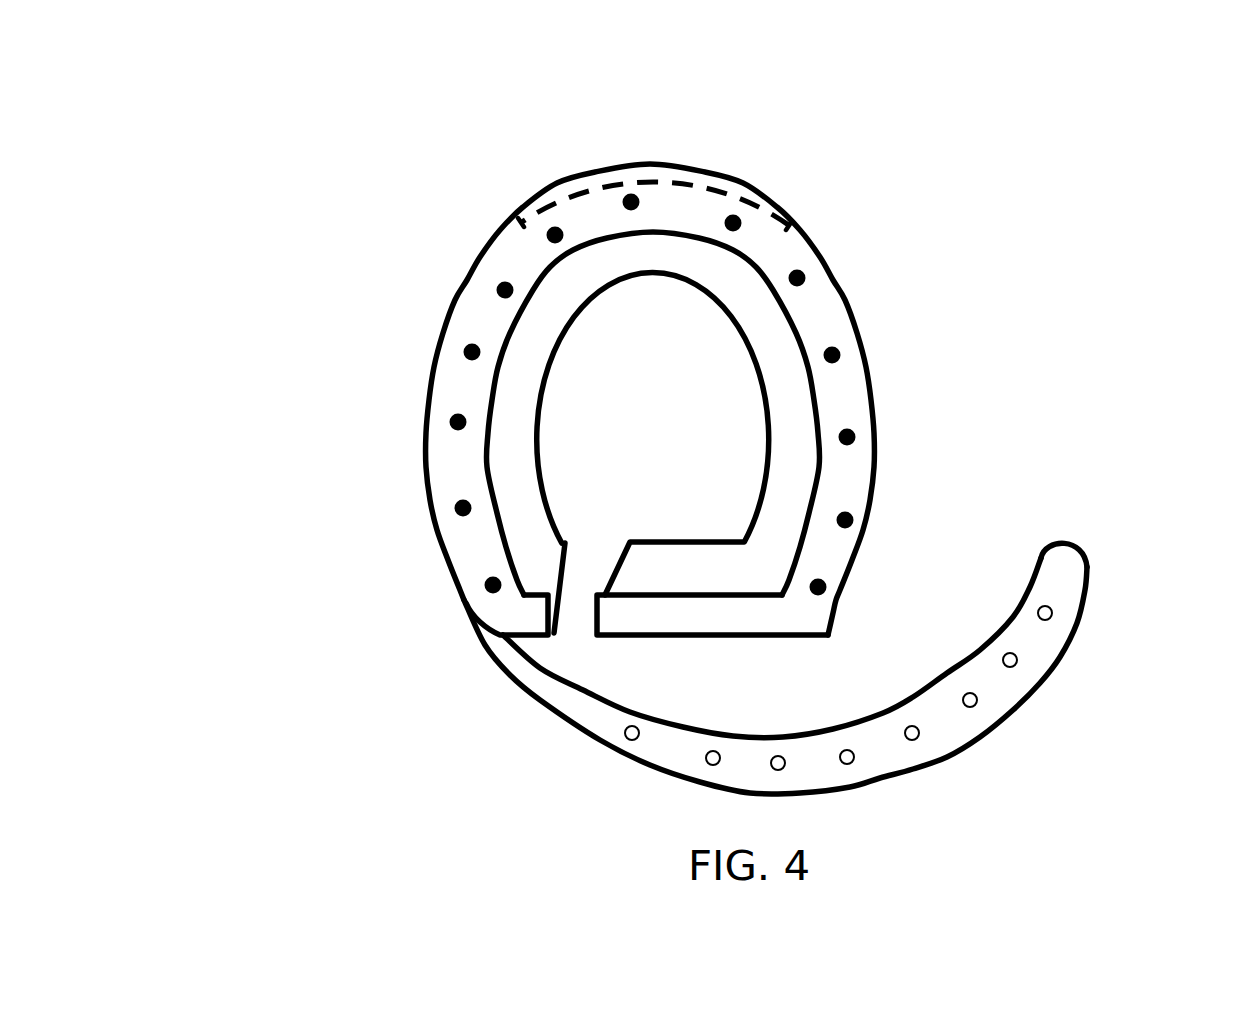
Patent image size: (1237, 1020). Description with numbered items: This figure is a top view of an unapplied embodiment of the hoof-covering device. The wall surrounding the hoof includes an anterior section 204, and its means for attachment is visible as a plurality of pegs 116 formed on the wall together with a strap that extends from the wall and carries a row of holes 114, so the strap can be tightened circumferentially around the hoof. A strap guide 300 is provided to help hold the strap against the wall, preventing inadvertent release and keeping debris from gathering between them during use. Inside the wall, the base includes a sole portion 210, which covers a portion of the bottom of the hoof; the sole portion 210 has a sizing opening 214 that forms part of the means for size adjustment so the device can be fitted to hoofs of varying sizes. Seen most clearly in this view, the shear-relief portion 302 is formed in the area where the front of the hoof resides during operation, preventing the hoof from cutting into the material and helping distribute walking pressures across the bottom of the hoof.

The holes 114 is at (1018, 665).
The pegs 116 is at (453, 430).
The anterior section 204 is at (607, 210).
The sole portion 210 is at (780, 407).
The sizing opening 214 is at (577, 565).
The strap guide 300 is at (513, 333).
The shear-relief portion 302 is at (733, 200).